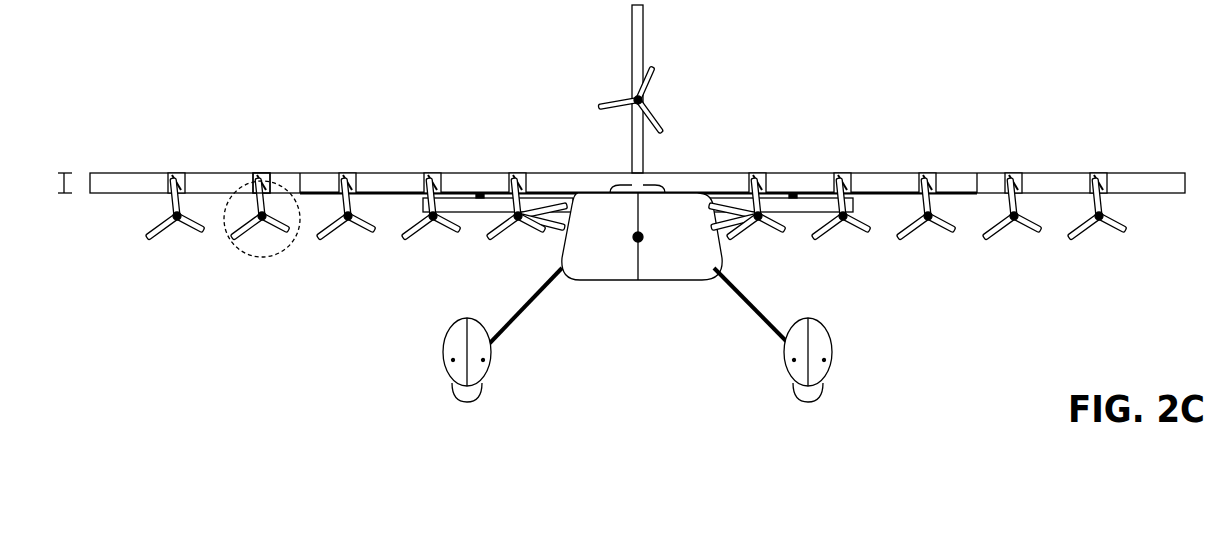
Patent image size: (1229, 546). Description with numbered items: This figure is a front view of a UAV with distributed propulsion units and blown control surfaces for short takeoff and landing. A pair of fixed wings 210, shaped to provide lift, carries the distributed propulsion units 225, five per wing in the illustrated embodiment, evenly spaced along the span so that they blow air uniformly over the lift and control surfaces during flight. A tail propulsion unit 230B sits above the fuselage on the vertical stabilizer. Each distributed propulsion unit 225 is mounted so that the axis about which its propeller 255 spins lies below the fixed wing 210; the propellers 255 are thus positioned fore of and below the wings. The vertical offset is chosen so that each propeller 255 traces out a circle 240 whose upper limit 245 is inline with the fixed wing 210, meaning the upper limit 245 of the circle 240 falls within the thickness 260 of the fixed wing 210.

The fixed wings 210 is at (458, 180).
The distributed propulsion units 225 is at (308, 321).
The tail propulsion unit 230B is at (676, 87).
The circle 240 is at (263, 257).
The upper limit 245 is at (262, 163).
The propellers 255 is at (243, 185).
The thickness 260 is at (64, 173).